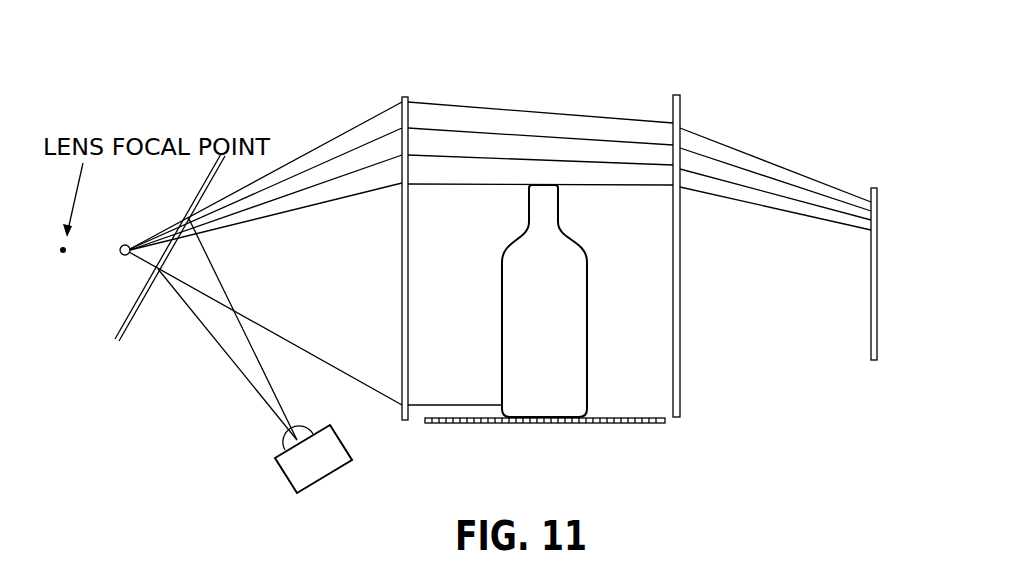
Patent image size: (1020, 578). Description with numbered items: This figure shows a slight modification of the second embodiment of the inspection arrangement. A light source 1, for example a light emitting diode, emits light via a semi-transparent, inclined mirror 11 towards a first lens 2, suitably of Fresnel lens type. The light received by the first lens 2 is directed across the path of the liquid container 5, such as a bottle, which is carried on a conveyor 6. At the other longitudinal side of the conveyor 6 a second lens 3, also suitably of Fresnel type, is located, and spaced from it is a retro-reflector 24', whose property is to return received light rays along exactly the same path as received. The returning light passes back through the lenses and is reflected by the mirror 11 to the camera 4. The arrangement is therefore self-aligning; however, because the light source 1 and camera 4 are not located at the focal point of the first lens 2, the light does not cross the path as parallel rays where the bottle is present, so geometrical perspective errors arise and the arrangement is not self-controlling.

The light source 1 is at (126, 243).
The first lens 2 is at (408, 125).
The second lens 3 is at (680, 177).
The camera 4 is at (325, 465).
The liquid container 5 is at (587, 338).
The conveyor 6 is at (612, 423).
The semi-transparent inclined mirror 11 is at (124, 322).
The retro-reflector 24' is at (854, 298).